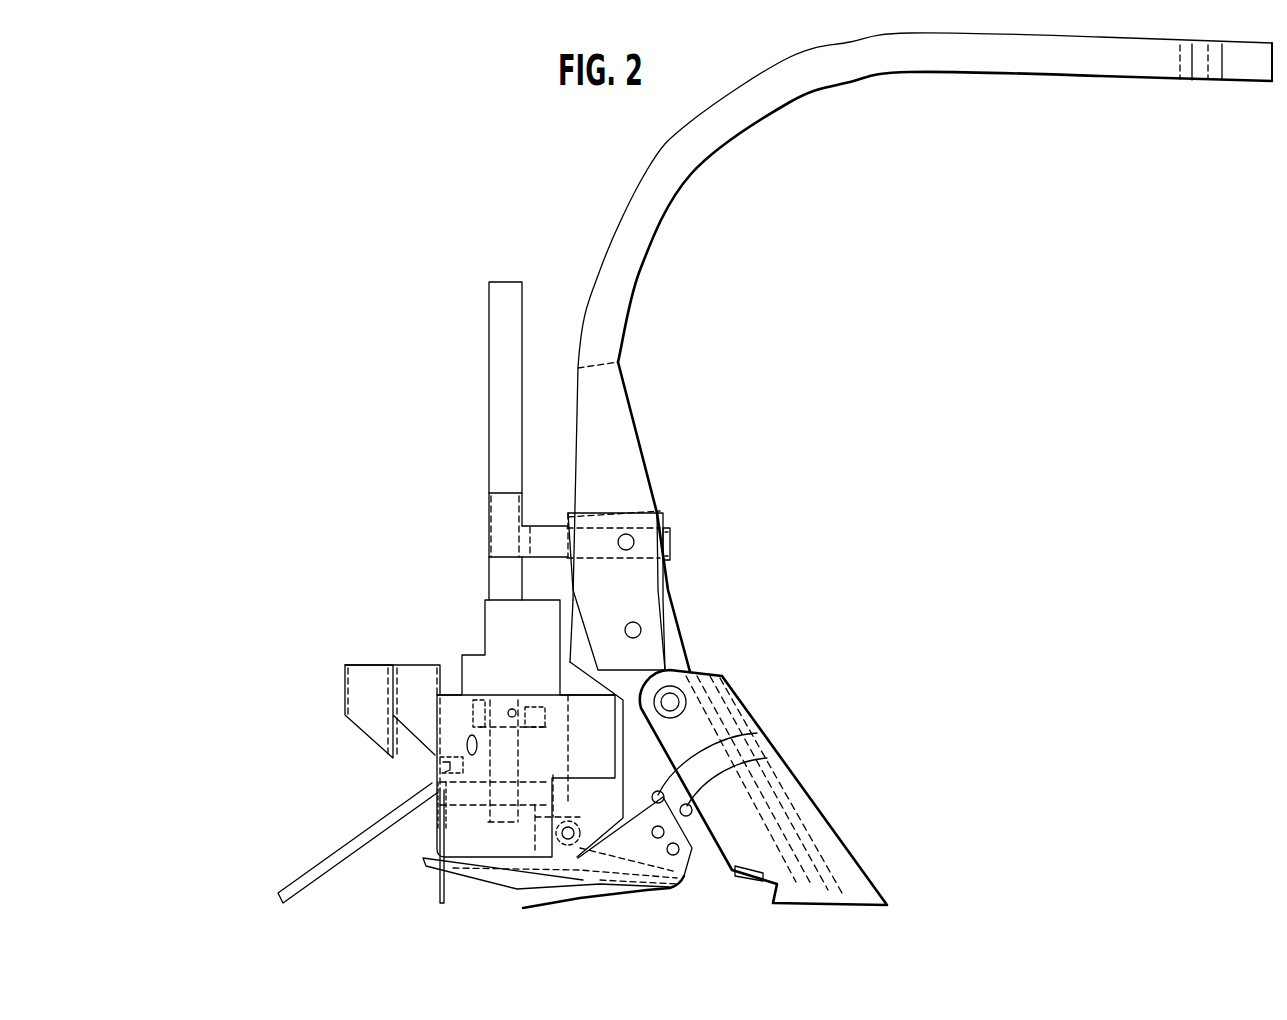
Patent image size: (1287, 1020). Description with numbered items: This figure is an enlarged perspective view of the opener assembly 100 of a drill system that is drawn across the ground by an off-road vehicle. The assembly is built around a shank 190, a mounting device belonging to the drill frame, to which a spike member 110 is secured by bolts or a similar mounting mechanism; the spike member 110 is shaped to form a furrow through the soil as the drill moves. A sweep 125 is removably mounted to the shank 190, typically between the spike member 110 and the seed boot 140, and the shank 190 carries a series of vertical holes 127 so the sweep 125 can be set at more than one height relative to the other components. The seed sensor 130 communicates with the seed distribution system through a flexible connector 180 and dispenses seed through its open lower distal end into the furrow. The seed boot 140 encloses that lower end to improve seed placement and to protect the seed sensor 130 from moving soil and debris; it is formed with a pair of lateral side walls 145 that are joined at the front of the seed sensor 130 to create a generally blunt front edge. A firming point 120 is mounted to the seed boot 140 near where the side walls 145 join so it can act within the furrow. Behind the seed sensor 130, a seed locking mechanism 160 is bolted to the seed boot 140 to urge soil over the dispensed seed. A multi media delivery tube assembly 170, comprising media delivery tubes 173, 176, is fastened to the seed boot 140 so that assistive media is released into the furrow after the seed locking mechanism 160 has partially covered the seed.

The opener assembly 100 is at (722, 530).
The spike member 110 is at (828, 835).
The firming point 120 is at (523, 908).
The sweep 125 is at (640, 890).
The vertical holes 127 is at (757, 733).
The seed sensor 130 is at (485, 620).
The seed boot 140 is at (391, 783).
The lateral side walls 145 is at (437, 838).
The seed locking mechanism 160 is at (310, 870).
The multi media delivery tube assembly 170 is at (324, 688).
The media delivery tube 173 is at (413, 667).
The media delivery tube 176 is at (363, 665).
The flexible connector 180 is at (489, 437).
The shank 190 is at (680, 623).